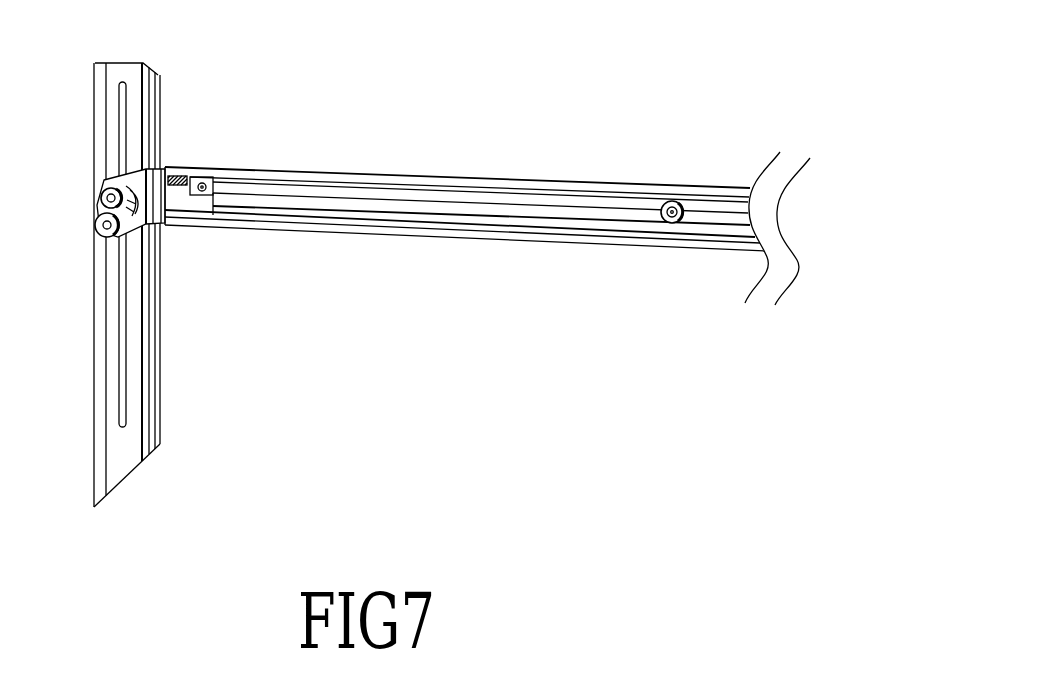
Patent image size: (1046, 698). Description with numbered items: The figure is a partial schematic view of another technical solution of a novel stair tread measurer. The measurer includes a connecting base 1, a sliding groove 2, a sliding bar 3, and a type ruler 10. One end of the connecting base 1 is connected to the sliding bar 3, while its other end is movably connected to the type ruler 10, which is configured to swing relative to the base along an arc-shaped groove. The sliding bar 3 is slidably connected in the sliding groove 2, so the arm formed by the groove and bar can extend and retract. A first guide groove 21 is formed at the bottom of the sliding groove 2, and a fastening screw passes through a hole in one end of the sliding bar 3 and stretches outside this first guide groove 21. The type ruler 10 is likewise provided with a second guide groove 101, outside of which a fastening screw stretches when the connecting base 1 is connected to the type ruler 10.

The connecting base 1 is at (188, 226).
The sliding groove 2 is at (487, 178).
The sliding bar 3 is at (251, 168).
The type ruler 10 is at (118, 285).
The first guide groove 21 is at (358, 238).
The second guide groove 101 is at (125, 335).